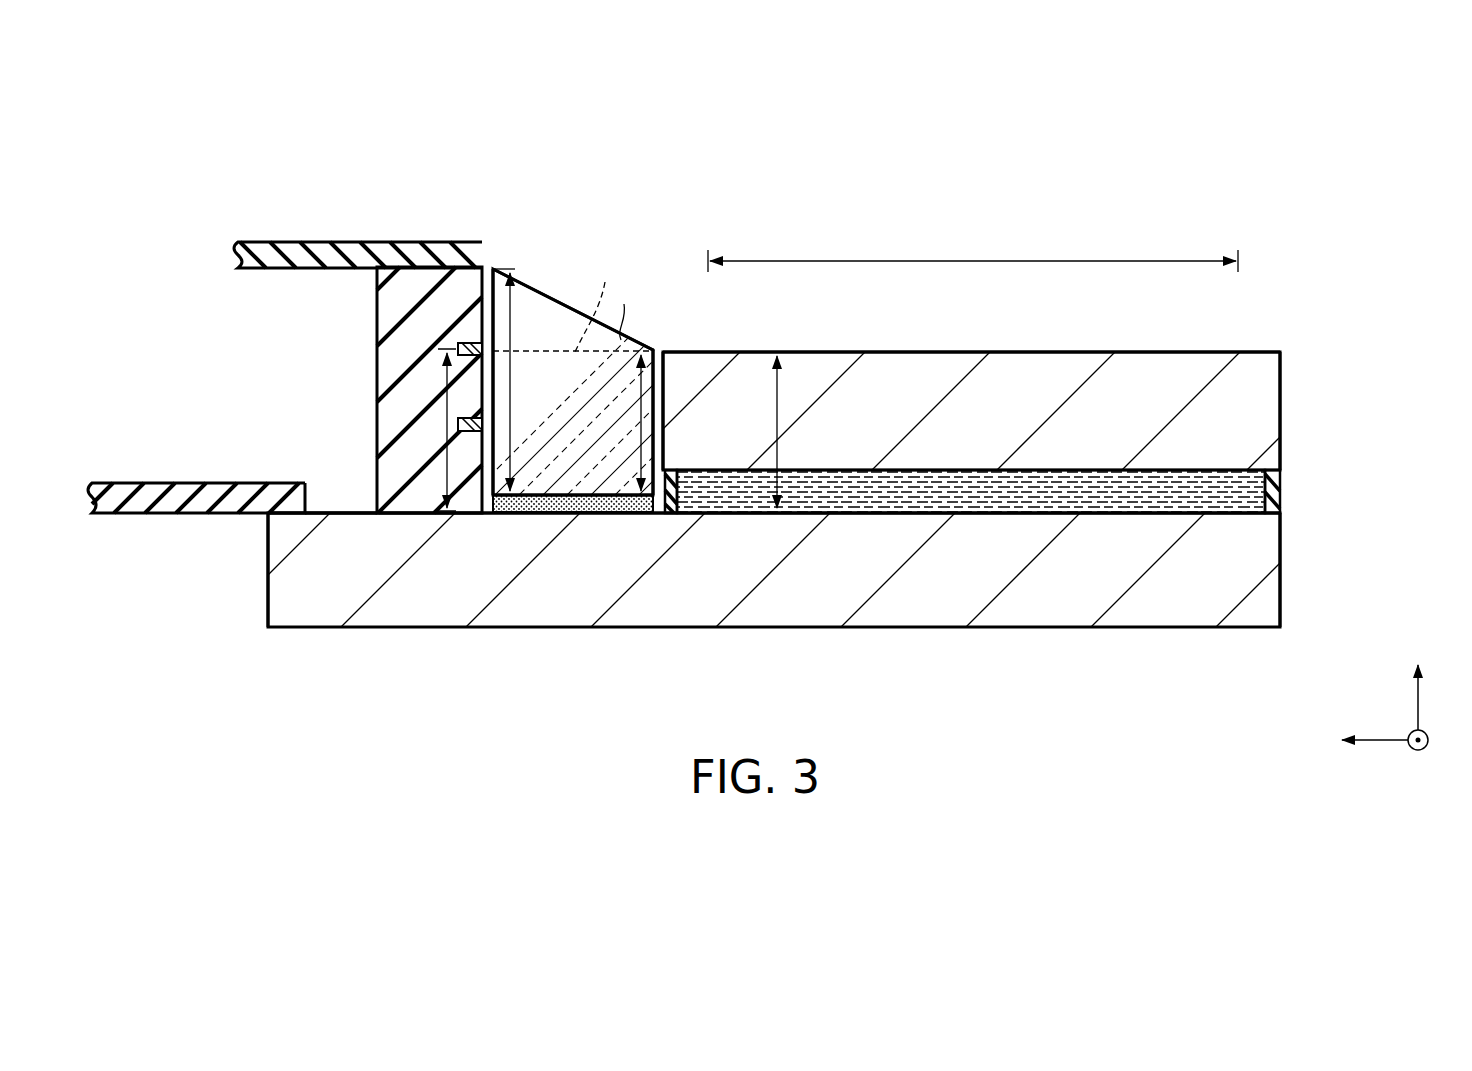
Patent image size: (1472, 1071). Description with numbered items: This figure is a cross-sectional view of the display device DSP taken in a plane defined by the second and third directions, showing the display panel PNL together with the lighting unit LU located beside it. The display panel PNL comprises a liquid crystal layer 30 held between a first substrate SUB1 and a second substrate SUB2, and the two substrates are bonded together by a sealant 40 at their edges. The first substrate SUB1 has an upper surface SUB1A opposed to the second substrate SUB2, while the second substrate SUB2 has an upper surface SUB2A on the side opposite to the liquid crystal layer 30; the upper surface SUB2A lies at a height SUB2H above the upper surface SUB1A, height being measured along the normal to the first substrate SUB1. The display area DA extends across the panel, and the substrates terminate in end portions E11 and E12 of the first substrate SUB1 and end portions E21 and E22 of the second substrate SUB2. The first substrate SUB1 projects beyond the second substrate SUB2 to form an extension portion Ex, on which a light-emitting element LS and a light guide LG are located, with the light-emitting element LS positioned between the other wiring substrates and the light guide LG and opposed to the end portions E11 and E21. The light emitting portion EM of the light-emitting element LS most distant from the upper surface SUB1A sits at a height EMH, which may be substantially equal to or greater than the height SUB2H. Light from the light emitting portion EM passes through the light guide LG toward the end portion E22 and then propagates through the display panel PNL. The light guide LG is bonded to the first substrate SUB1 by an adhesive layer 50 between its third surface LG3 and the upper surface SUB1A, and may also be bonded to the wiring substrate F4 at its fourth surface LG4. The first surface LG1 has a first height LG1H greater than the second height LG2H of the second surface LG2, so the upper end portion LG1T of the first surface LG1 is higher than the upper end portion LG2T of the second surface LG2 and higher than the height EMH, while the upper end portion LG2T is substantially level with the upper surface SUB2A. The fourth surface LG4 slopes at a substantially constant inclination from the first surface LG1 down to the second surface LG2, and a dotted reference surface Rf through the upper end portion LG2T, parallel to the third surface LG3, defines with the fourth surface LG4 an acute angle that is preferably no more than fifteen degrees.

The display device DSP is at (1360, 310).
The display panel PNL is at (1284, 349).
The lighting unit LU is at (341, 156).
The first substrate SUB1 is at (1286, 560).
The second substrate SUB2 is at (1286, 405).
The upper surface of the first substrate SUB1A is at (850, 509).
The upper surface of the second substrate SUB2A is at (920, 348).
The height of the upper surface SUB2A SUB2H is at (780, 422).
The end portion of the first substrate E11 is at (1286, 597).
The end portion of the first substrate E12 is at (264, 583).
The end portion of the second substrate E21 is at (1286, 367).
The end portion of the second substrate E22 is at (680, 388).
The extension portion Ex is at (335, 508).
The liquid crystal layer 30 is at (1270, 480).
The sealant 40 is at (1272, 510).
The adhesive layer 50 is at (570, 502).
The display area DA is at (973, 249).
The light-emitting element LS is at (377, 327).
The light emitting portion EM is at (485, 288).
The height of the light emitting portion EMH is at (452, 428).
The light guide LG is at (530, 482).
The first surface LG1 is at (463, 341).
The second surface LG2 is at (666, 412).
The third surface LG3 is at (608, 502).
The fourth surface LG4 is at (568, 298).
The upper end portion of the first surface LG1T is at (495, 266).
The upper end portion of the second surface LG2T is at (658, 349).
The first height LG1H is at (511, 366).
The second height LG2H is at (641, 445).
The reference surface Rf is at (596, 303).
The wiring substrate F4 is at (284, 242).